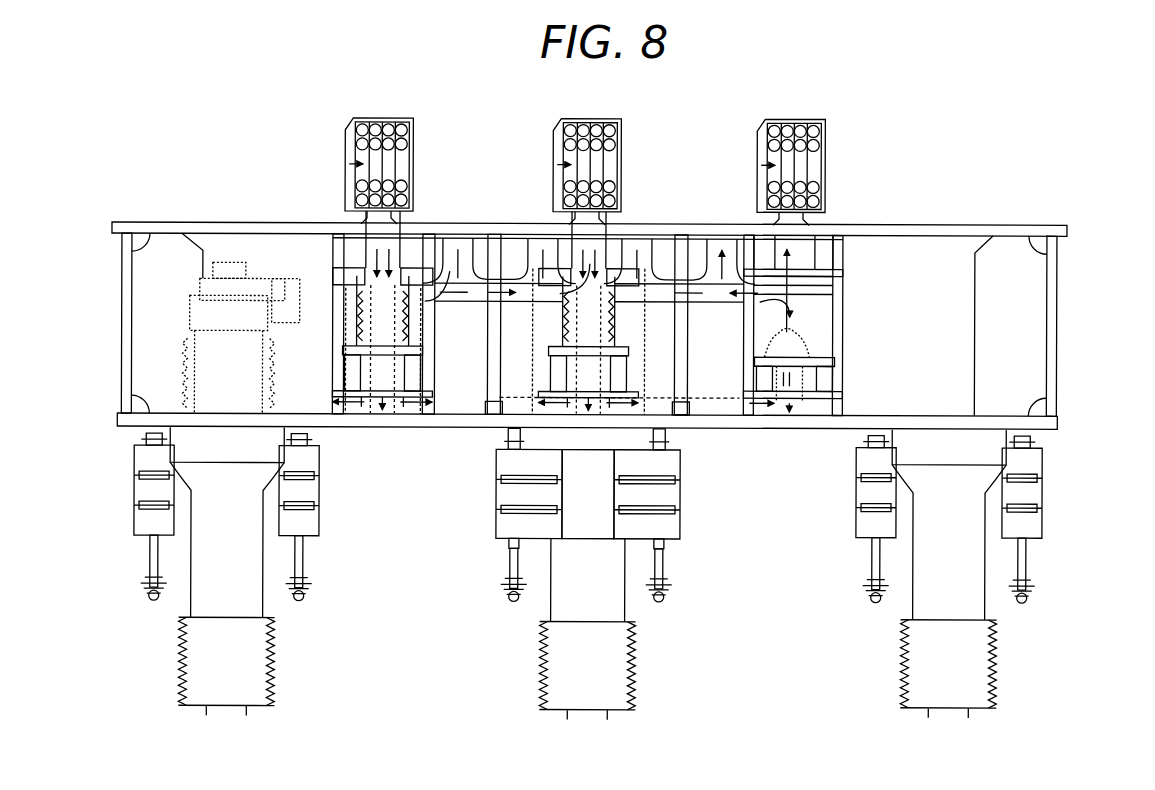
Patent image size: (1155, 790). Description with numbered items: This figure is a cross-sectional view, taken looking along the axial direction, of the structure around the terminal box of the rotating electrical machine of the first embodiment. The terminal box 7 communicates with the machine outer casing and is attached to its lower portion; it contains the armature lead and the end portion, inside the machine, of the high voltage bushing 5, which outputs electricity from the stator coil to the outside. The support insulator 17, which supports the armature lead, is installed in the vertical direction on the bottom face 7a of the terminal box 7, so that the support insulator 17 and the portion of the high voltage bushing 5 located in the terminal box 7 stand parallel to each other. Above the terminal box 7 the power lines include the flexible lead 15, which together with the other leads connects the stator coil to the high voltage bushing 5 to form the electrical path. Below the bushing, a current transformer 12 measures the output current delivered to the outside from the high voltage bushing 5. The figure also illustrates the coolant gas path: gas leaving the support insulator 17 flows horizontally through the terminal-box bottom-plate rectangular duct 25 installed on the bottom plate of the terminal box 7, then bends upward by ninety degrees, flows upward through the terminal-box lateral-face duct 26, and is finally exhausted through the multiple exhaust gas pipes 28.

The high voltage bushing 5 is at (275, 690).
The terminal box 7 is at (1058, 326).
The bottom face 7a is at (1060, 426).
The current transformer 12 is at (320, 525).
The flexible lead 15 is at (415, 162).
The support insulator 17 is at (612, 323).
The terminal-box bottom-plate rectangular duct 25 is at (715, 405).
The terminal-box lateral-face duct 26 is at (826, 312).
The exhaust gas pipes 28 is at (446, 240).